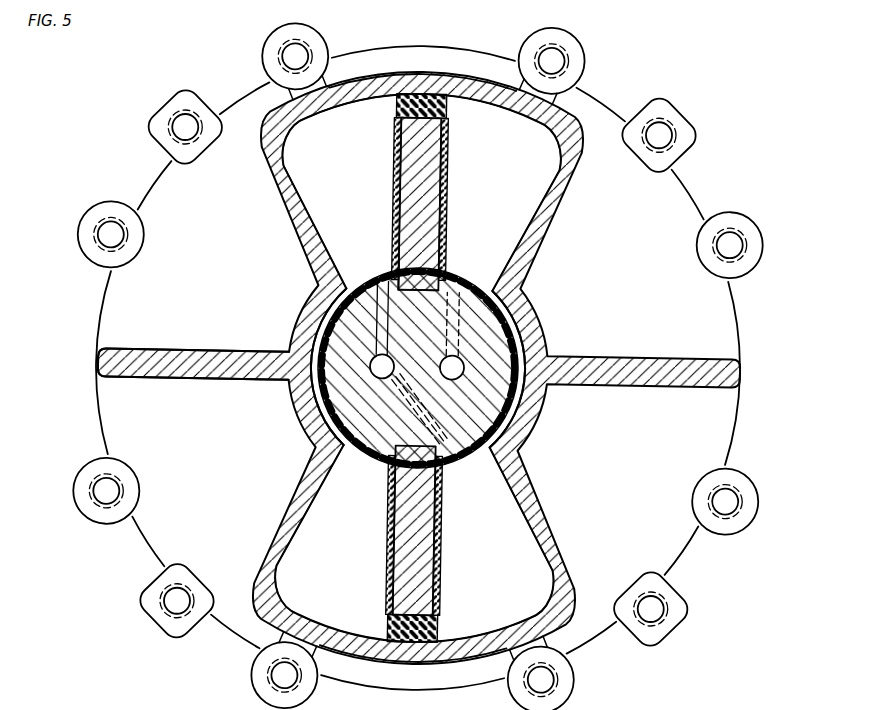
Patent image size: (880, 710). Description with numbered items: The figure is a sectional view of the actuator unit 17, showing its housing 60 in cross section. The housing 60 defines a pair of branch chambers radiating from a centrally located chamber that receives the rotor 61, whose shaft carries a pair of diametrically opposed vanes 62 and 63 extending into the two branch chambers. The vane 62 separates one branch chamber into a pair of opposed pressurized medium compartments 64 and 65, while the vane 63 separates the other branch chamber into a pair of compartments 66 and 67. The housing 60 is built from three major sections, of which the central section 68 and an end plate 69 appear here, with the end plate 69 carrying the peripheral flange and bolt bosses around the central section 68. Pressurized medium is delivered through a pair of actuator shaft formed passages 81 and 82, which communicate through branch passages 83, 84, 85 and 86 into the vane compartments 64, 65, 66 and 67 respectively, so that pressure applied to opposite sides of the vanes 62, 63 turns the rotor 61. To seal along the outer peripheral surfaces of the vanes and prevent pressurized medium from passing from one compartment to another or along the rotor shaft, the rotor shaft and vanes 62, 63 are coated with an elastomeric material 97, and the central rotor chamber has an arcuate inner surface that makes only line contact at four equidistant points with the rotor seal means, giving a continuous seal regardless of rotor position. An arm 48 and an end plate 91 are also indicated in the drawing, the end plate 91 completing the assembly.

The actuator unit 17 is at (138, 183).
The inlet passage arm 48 is at (313, 353).
The housing 60 is at (588, 628).
The rotor 61 is at (510, 303).
The vane 62 is at (425, 153).
The vane 63 is at (425, 532).
The pressurized medium compartment 64 is at (345, 196).
The pressurized medium compartment 65 is at (529, 182).
The compartment 66 is at (346, 570).
The compartment 67 is at (511, 563).
The central section 68 is at (283, 203).
The end plate 69 is at (162, 528).
The actuator shaft formed passage 81 is at (380, 368).
The actuator shaft formed passage 82 is at (452, 370).
The branch passage 83 is at (378, 290).
The branch passage 84 is at (466, 301).
The branch passage 85 is at (362, 455).
The branch passage 86 is at (458, 452).
The end plate 91 is at (396, 262).
The elastomeric material 97 is at (443, 110).